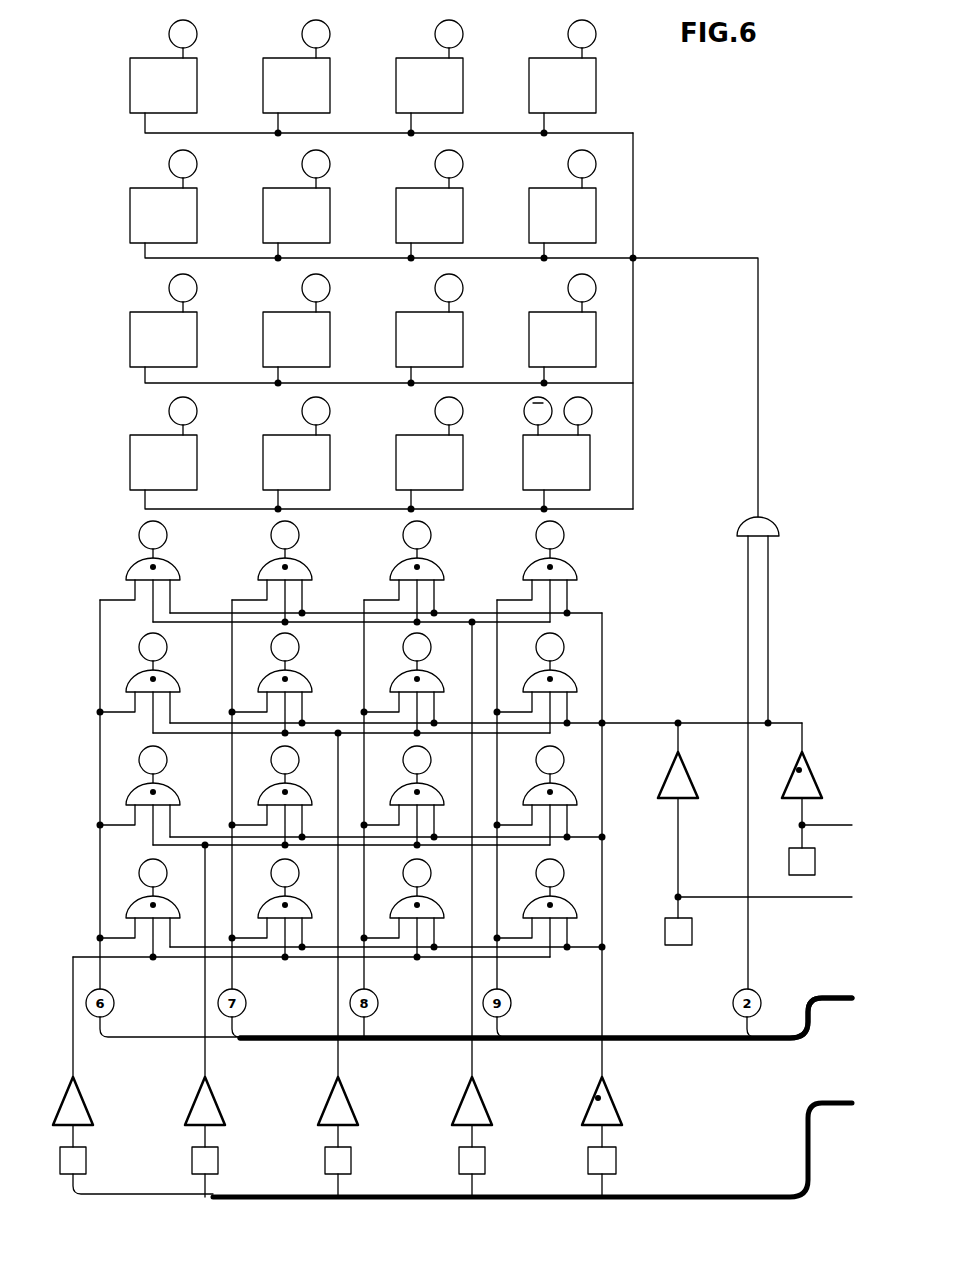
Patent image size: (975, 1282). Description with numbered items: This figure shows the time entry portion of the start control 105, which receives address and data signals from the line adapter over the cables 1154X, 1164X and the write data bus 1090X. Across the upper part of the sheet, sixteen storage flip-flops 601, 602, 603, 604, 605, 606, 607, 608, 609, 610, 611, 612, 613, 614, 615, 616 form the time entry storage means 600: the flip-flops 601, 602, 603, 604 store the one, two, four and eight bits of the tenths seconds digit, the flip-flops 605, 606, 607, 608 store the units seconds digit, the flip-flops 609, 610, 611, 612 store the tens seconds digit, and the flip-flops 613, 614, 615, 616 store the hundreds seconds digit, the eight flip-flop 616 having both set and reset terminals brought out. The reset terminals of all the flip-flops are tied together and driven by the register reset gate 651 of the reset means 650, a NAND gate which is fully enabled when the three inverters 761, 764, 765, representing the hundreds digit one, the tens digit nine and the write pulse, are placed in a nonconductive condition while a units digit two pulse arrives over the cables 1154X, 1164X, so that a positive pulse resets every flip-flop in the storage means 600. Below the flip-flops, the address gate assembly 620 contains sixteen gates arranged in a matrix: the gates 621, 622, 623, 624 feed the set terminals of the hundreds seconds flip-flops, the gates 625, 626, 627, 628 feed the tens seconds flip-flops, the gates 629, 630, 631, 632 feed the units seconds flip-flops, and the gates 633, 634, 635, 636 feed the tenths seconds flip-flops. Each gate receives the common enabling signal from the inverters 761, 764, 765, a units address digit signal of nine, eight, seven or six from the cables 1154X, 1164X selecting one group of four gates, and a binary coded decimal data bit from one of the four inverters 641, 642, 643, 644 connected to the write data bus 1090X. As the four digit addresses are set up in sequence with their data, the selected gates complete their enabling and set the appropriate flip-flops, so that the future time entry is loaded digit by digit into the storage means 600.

The start control 105 is at (752, 106).
The time entry storage means 600 is at (80, 76).
The storage flip-flop 601 is at (166, 58).
The storage flip-flop 602 is at (299, 58).
The storage flip-flop 603 is at (432, 58).
The storage flip-flop 604 is at (565, 58).
The storage flip-flop 605 is at (130, 200).
The storage flip-flop 606 is at (263, 200).
The storage flip-flop 607 is at (396, 200).
The storage flip-flop 608 is at (529, 200).
The storage flip-flop 609 is at (130, 323).
The storage flip-flop 610 is at (263, 323).
The storage flip-flop 611 is at (396, 323).
The storage flip-flop 612 is at (529, 323).
The storage flip-flop 613 is at (130, 448).
The storage flip-flop 614 is at (263, 448).
The storage flip-flop 615 is at (396, 448).
The storage flip-flop 616 is at (523, 448).
The address gate assembly 620 is at (74, 598).
The gate 621 is at (178, 910).
The gate 622 is at (178, 797).
The gate 623 is at (178, 684).
The gate 624 is at (178, 572).
The gate 625 is at (310, 910).
The gate 626 is at (310, 797).
The gate 627 is at (310, 684).
The gate 628 is at (310, 572).
The gate 629 is at (442, 910).
The gate 630 is at (442, 797).
The gate 631 is at (442, 684).
The gate 632 is at (442, 572).
The gate 633 is at (575, 910).
The gate 634 is at (575, 797).
The gate 635 is at (575, 684).
The gate 636 is at (575, 572).
The inverter 641 is at (58, 1102).
The inverter 642 is at (190, 1102).
The inverter 643 is at (322, 1102).
The inverter 644 is at (456, 1105).
The reset means 650 is at (840, 446).
The register reset gate 651 is at (774, 520).
The inverter 761 is at (668, 790).
The inverter 764 is at (811, 770).
The inverter 765 is at (592, 1100).
The cable 1090X is at (736, 1197).
The cable 1154X is at (546, 991).
The cable 1164X is at (848, 998).